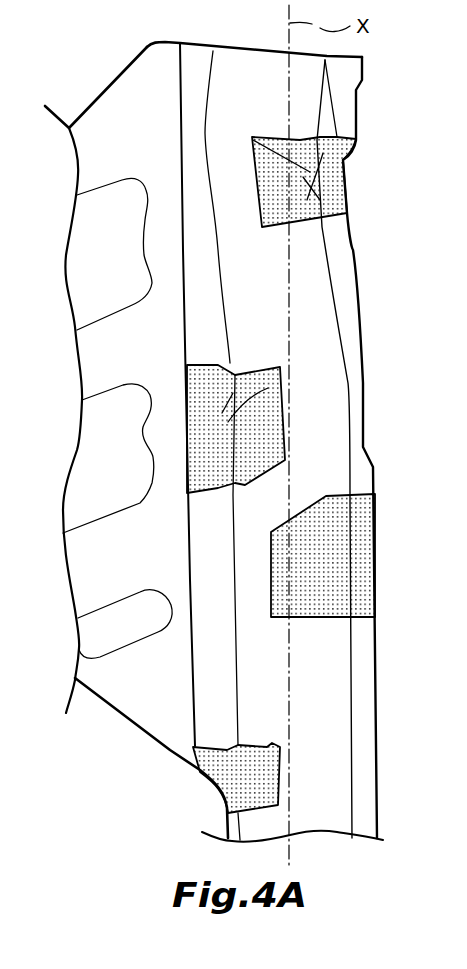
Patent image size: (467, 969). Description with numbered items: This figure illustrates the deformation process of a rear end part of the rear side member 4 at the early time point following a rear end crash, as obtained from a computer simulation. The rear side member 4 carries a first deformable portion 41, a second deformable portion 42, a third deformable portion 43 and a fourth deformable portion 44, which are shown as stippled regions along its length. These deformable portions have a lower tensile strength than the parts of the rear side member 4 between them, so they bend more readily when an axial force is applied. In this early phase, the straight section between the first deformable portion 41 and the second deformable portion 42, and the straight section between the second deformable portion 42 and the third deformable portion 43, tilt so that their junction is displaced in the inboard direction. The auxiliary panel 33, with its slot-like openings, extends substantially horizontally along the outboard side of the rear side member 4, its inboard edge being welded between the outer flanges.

The rear side member 4 is at (250, 44).
The auxiliary panel 33 is at (127, 92).
The first deformable portion 41 is at (298, 195).
The second deformable portion 42 is at (252, 427).
The third deformable portion 43 is at (326, 568).
The fourth deformable portion 44 is at (255, 778).